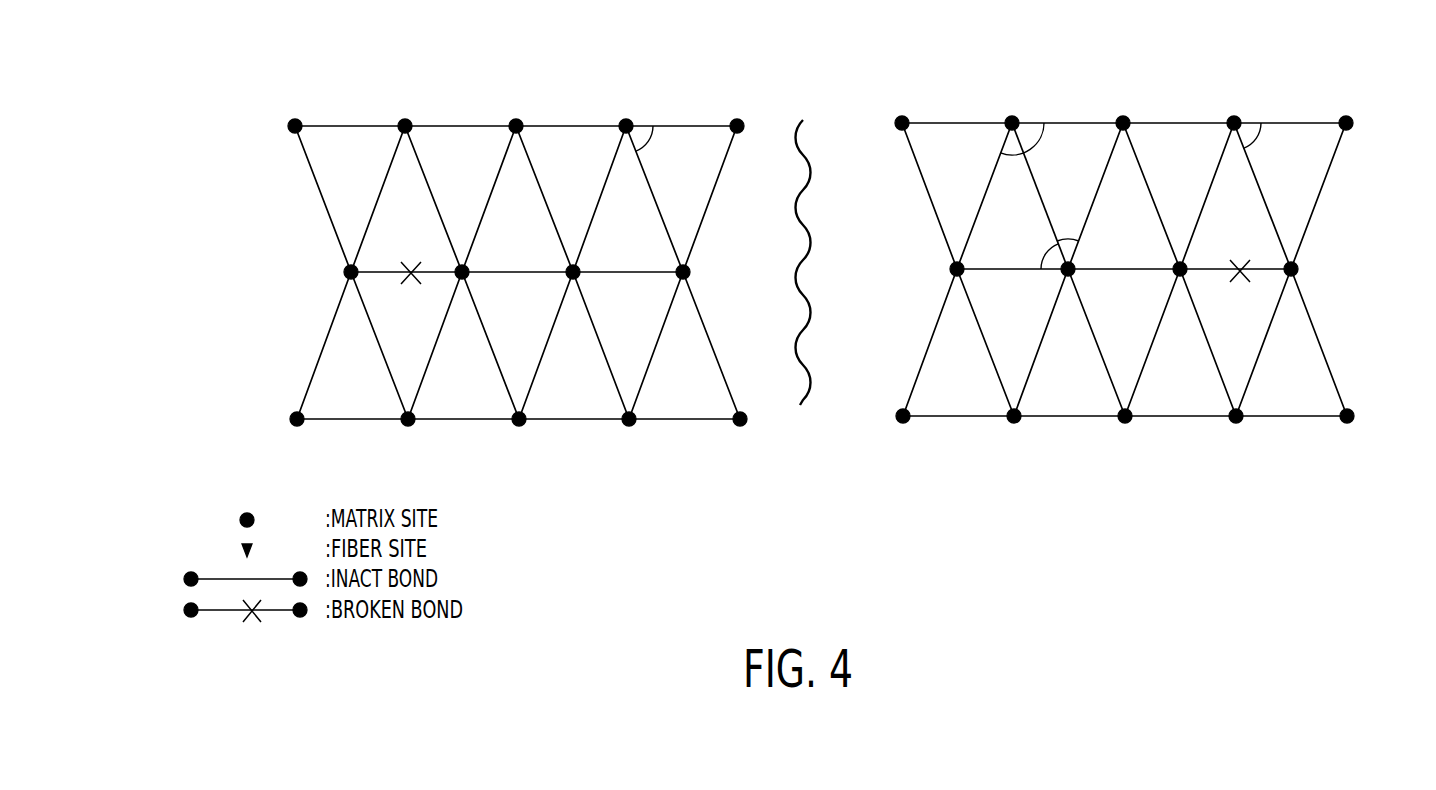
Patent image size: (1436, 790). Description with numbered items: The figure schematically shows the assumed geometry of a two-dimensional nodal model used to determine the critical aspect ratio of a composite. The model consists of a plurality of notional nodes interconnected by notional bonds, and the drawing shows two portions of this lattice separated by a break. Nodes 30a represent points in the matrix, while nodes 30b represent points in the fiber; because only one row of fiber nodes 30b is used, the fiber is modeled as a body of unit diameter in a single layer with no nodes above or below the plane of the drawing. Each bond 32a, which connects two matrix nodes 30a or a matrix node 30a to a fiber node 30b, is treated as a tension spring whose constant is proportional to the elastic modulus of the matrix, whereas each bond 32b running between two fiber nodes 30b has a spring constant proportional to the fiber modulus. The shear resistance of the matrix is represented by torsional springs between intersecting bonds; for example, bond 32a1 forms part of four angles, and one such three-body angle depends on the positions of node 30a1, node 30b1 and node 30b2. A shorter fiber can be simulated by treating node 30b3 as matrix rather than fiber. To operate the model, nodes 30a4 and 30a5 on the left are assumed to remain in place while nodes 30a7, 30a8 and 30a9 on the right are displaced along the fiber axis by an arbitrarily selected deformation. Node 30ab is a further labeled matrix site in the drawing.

The matrix node 30a is at (407, 120).
The fiber node 30b is at (462, 265).
The matrix node 30a4 is at (294, 118).
The matrix node 30a5 is at (347, 268).
The matrix site 30ab is at (294, 424).
The matrix bond 32a is at (332, 120).
The fiber bond 32b is at (538, 274).
The matrix bond 32a1 is at (1043, 207).
The matrix node 30a1 is at (1011, 118).
The fiber node 30b1 is at (950, 265).
The fiber node 30b2 is at (1076, 270).
The fiber node 30b3 is at (1181, 265).
The matrix node 30a7 is at (1353, 123).
The matrix node 30a8 is at (1298, 268).
The matrix node 30a9 is at (1355, 416).